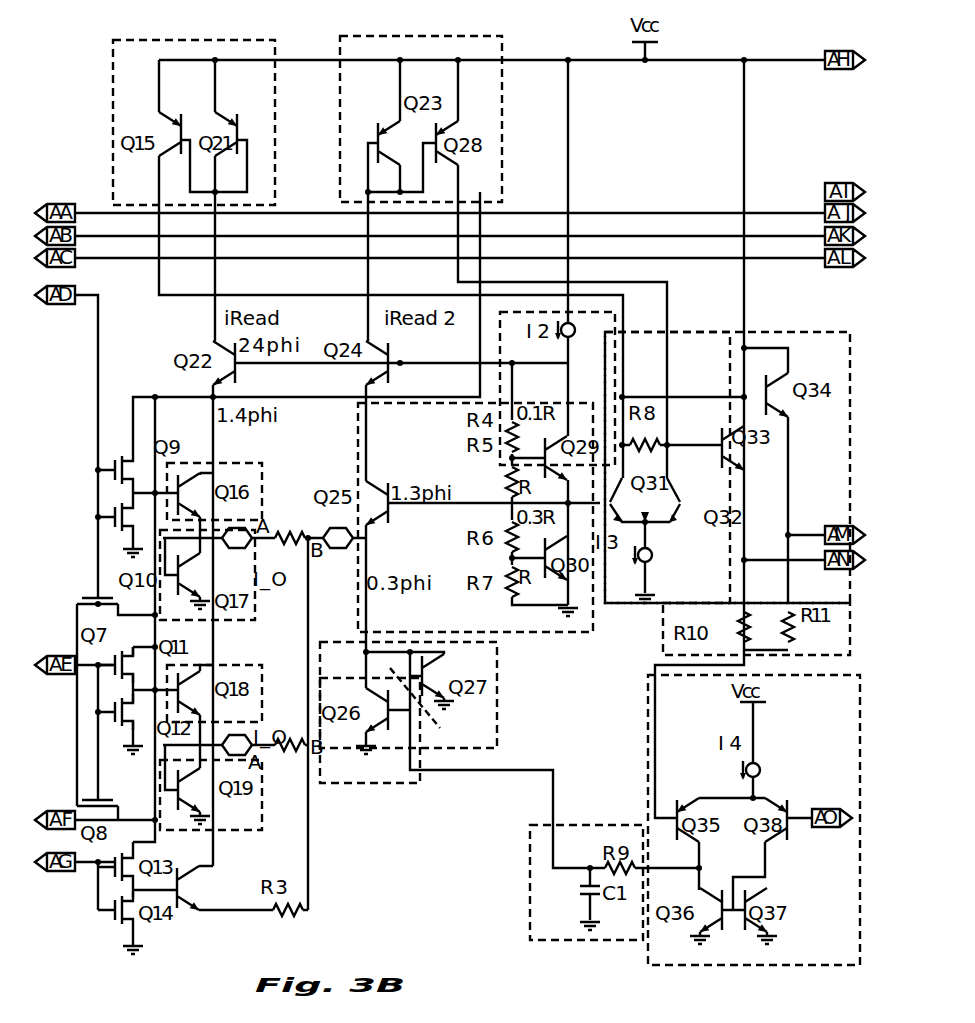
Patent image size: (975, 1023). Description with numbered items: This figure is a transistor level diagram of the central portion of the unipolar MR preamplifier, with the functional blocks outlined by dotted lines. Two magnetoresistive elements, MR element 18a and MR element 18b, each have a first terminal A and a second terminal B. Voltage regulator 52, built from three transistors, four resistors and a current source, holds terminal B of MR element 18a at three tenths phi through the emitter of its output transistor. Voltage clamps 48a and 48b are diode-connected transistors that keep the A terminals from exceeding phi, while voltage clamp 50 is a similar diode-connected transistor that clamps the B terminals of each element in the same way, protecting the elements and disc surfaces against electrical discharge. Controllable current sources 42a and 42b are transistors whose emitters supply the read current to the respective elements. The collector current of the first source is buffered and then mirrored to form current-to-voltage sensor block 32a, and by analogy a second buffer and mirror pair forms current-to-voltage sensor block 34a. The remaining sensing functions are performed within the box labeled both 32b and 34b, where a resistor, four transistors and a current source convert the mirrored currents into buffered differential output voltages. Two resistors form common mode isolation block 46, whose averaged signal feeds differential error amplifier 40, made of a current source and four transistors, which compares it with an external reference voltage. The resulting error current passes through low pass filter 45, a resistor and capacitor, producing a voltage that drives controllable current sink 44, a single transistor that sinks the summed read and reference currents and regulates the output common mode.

The current-to-voltage sensor block 32a is at (200, 40).
The current-to-voltage sensor block 34a is at (425, 38).
The current-to-voltage sensor block 32b is at (724, 332).
The current-to-voltage sensor block 34b is at (797, 332).
The controllable current source 42a is at (262, 470).
The controllable current source 42b is at (255, 672).
The voltage clamp 48a is at (245, 618).
The voltage clamp 48b is at (245, 830).
The MR element 18a is at (290, 522).
The MR element 18b is at (278, 760).
The differential error amplifier 40 is at (648, 714).
The controllable current sink 44 is at (385, 783).
The low pass filter 45 is at (530, 858).
The common mode isolation block 46 is at (663, 636).
The voltage clamp 50 is at (497, 688).
The voltage regulator 52 is at (540, 633).